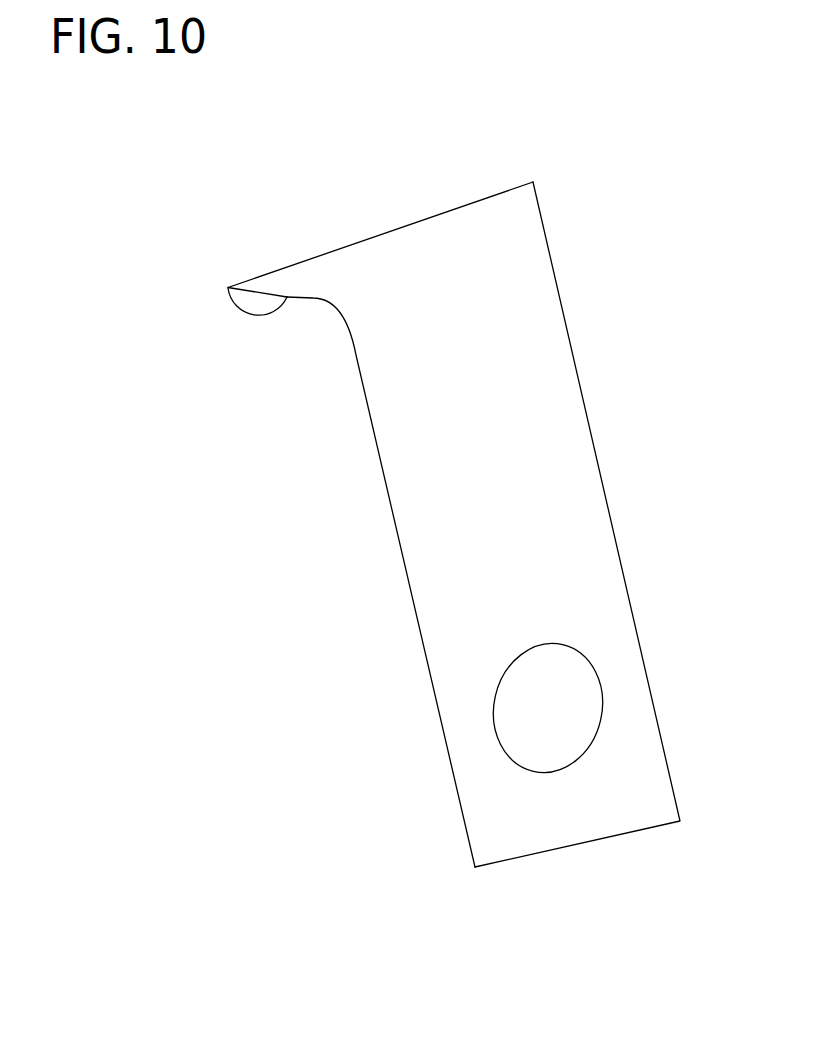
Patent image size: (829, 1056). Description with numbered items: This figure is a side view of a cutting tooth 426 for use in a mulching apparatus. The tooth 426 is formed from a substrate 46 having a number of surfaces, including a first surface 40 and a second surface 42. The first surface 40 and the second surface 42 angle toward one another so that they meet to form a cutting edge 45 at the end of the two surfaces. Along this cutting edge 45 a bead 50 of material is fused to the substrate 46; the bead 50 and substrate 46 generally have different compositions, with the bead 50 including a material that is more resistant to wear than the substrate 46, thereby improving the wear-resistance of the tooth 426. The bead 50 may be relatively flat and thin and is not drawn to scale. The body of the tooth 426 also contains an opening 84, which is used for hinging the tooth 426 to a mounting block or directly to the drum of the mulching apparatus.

The cutting tooth 426 is at (419, 514).
The second surface 42 is at (327, 253).
The cutting edge 45 is at (228, 288).
The bead 50 is at (252, 307).
The first surface 40 is at (296, 298).
The substrate 46 is at (520, 283).
The opening 84 is at (562, 683).